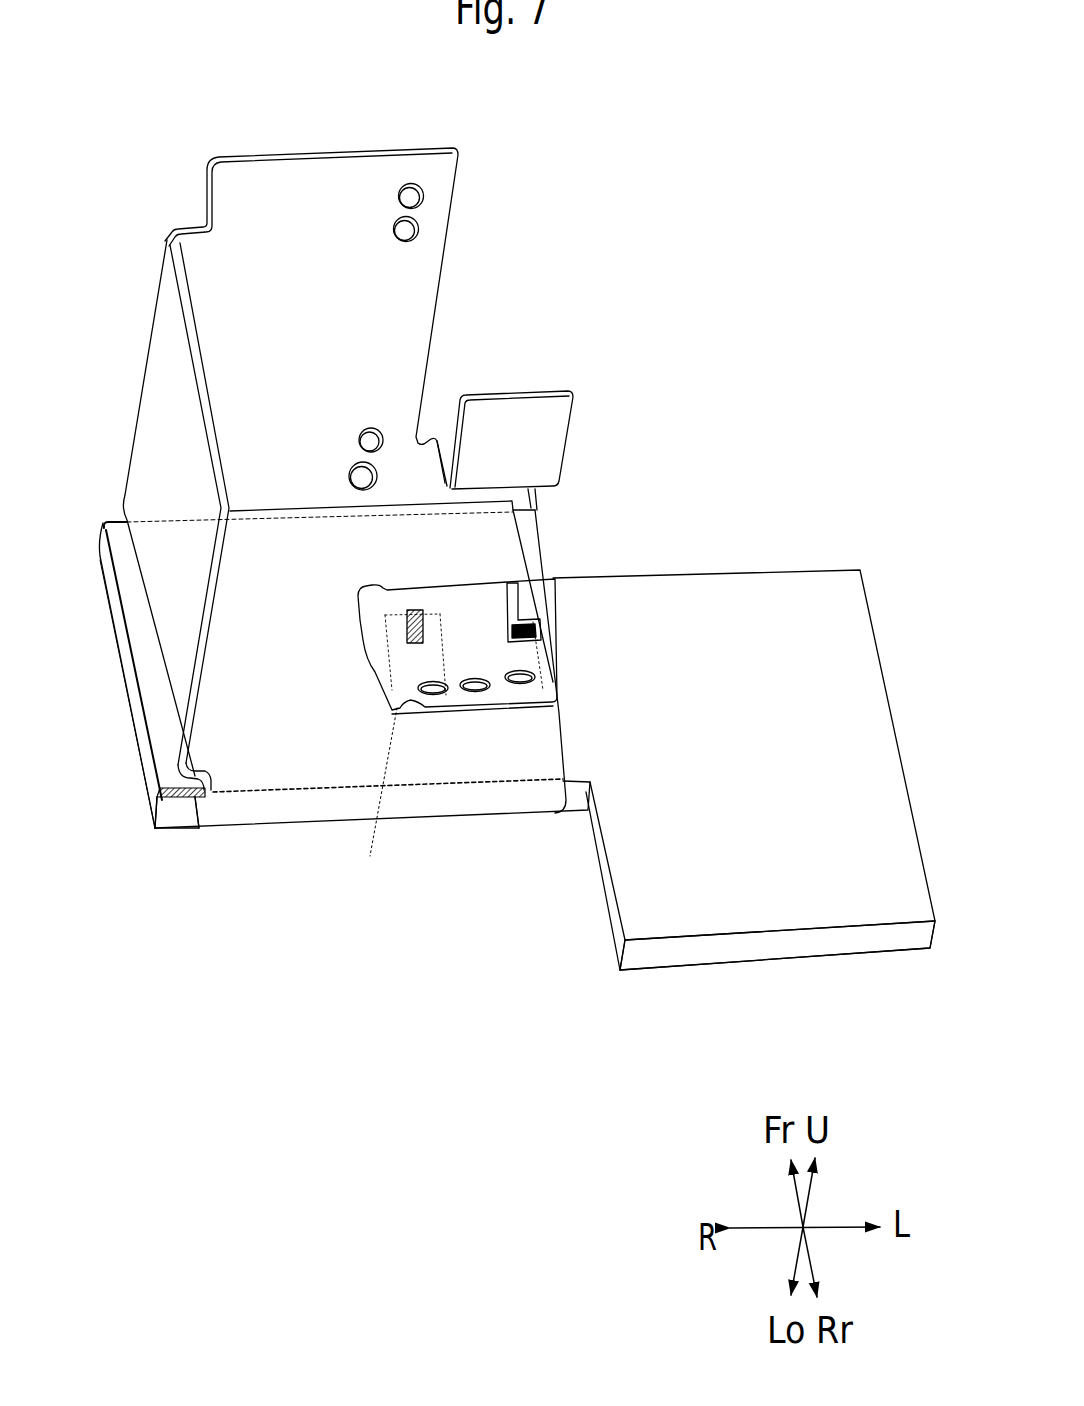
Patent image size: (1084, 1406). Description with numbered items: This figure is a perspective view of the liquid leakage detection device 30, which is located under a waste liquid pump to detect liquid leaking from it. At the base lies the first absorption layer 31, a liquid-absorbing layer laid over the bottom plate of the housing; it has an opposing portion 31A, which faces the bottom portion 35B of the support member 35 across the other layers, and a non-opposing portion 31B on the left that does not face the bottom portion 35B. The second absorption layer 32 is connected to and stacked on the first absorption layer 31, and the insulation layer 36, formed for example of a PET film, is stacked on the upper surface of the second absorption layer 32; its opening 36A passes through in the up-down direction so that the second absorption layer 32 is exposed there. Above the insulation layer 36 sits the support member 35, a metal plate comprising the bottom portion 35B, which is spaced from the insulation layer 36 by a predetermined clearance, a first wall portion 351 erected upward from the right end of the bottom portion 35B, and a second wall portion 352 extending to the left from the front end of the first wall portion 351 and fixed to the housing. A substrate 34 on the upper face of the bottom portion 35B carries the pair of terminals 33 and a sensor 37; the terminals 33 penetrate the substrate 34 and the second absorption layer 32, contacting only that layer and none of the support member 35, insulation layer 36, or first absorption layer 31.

The liquid leakage detection device 30 is at (497, 616).
The first absorption layer 31 is at (497, 784).
The opposing portion 31A is at (150, 812).
The non-opposing portion 31B is at (729, 969).
The second absorption layer 32 is at (150, 793).
The pair of terminals 33 is at (425, 608).
The substrate 34 is at (490, 573).
The support member 35 is at (320, 462).
The bottom portion 35B is at (567, 725).
The first wall portion 351 is at (163, 378).
The second wall portion 352 is at (438, 298).
The insulation layer 36 is at (147, 790).
The opening 36A is at (388, 797).
The sensor 37 is at (558, 592).